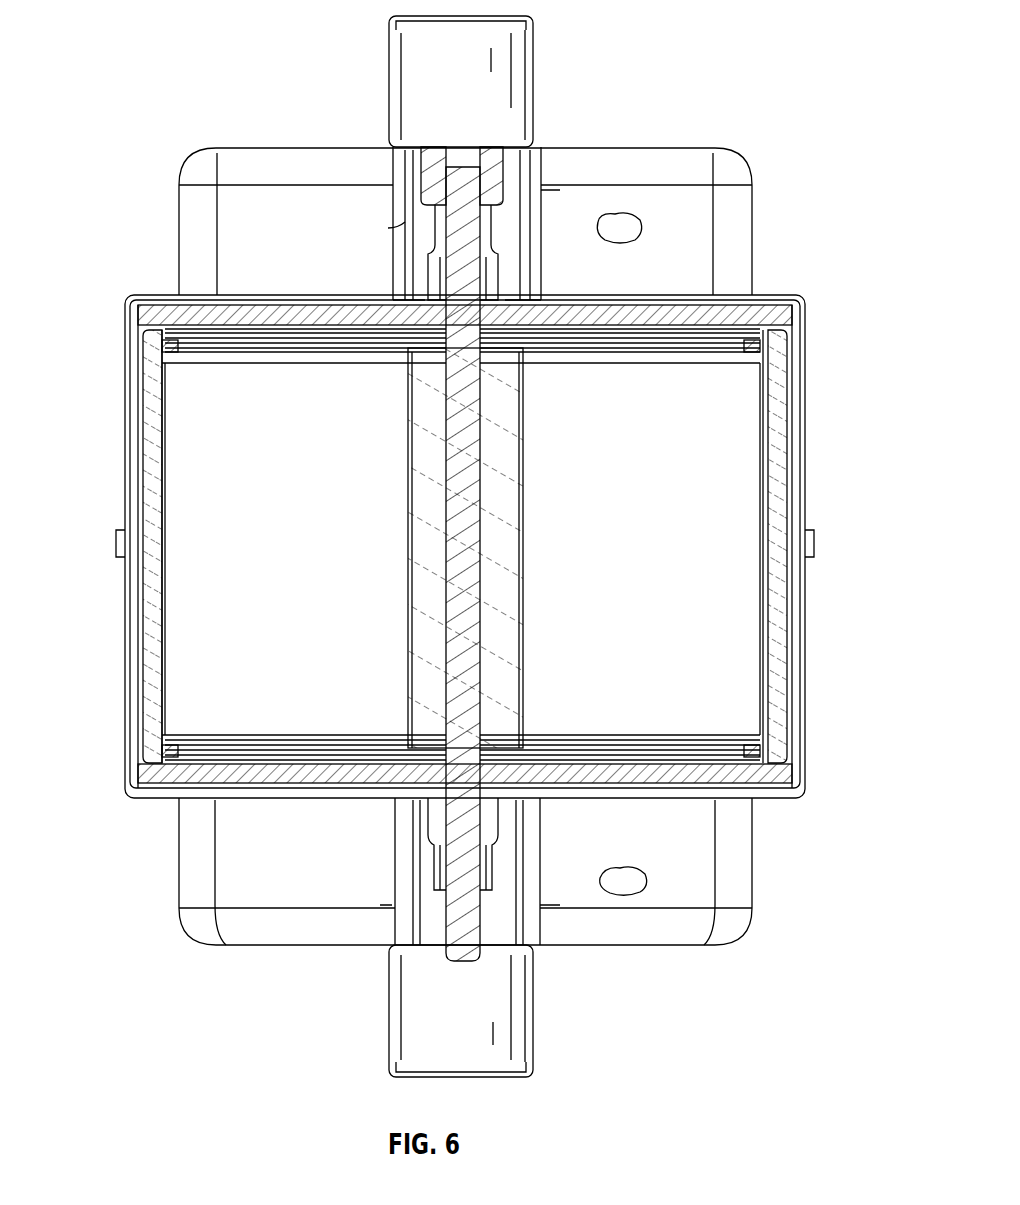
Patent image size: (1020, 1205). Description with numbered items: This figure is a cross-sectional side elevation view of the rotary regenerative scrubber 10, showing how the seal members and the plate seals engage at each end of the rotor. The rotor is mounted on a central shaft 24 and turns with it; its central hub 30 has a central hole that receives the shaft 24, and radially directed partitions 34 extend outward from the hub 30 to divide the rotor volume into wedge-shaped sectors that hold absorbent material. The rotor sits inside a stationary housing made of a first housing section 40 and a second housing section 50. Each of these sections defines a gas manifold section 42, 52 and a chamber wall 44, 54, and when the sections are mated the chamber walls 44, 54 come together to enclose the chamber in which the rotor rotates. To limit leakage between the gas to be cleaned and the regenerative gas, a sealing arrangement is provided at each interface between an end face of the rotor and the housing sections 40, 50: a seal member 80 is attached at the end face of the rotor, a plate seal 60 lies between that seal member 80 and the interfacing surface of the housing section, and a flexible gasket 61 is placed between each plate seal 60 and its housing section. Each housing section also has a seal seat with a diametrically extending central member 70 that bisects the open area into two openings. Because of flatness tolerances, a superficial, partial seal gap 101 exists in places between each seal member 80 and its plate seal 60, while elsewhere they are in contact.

The rotary regenerative scrubber 10 is at (148, 200).
The shaft 24 is at (446, 230).
The central hub 30 is at (525, 390).
The partitions 34 is at (212, 432).
The first housing section 40 is at (248, 945).
The gas manifold section 42 is at (620, 885).
The chamber wall 44 is at (805, 600).
The second housing section 50 is at (635, 148).
The gas manifold section 52 is at (625, 236).
The chamber wall 54 is at (800, 470).
The plate seal 60 is at (620, 350).
The flexible gasket 61 is at (650, 338).
The central member 70 is at (655, 300).
The seal member 80 is at (320, 340).
The seal gap 101 is at (330, 330).